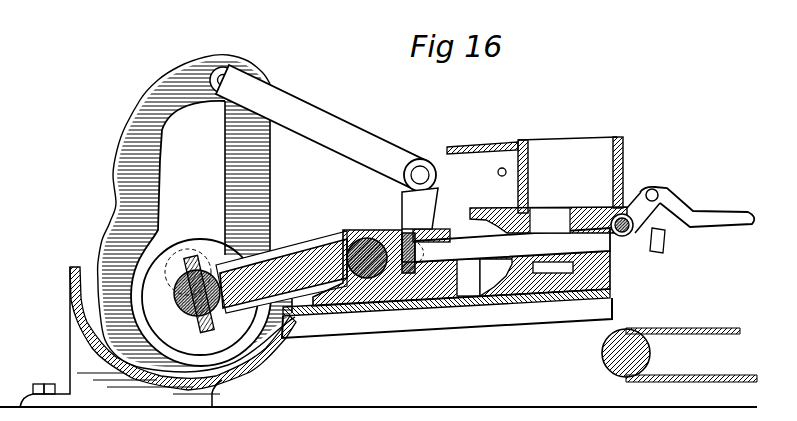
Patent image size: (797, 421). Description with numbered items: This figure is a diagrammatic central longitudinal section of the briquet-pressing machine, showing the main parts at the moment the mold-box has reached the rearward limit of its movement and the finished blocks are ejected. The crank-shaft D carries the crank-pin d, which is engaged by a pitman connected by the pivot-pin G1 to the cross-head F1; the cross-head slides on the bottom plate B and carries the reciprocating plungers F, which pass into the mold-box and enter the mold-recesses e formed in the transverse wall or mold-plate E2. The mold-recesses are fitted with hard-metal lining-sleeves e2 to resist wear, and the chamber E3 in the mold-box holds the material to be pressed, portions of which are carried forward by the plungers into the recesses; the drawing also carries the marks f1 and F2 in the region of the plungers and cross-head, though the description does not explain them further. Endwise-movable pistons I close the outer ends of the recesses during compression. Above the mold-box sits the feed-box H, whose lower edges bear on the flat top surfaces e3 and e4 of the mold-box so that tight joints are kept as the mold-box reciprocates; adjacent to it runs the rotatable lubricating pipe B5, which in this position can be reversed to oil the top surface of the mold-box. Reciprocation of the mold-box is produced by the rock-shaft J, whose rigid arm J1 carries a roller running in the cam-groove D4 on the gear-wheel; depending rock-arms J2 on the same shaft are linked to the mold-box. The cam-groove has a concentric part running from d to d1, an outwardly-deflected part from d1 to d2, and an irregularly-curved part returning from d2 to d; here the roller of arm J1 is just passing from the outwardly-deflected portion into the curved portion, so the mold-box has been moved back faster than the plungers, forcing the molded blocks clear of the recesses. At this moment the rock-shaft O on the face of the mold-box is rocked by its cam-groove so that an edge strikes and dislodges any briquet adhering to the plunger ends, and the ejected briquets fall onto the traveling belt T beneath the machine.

The end point of outwardly-deflected cam-groove portion d2 is at (245, 64).
The cam-groove D4 is at (143, 134).
The crank-pin d is at (112, 209).
The crank-shaft D is at (187, 248).
The end point of concentric cam-groove portion d1 is at (262, 238).
The pivot-pin G1 is at (377, 230).
The rigid arm or lever J1 is at (321, 127).
The rock-shaft J is at (422, 165).
The rock-arms J2 is at (401, 196).
The post f is at (406, 240).
The post top f1 is at (410, 232).
The flat top surface of mold-box e3 is at (473, 223).
The lubricating pipe B5 is at (505, 166).
The feed-box H is at (600, 150).
The chamber E3 is at (556, 220).
The flat top surface of mold-box e4 is at (613, 200).
The hard-metal lining-sleeves e2 is at (582, 229).
The apertures or mold-recesses e is at (611, 262).
The transverse wall or mold-plate E2 is at (611, 272).
The slide piece F2 is at (431, 245).
The plungers F is at (267, 317).
The bottom plate or web B is at (540, 300).
The cross-head F1 is at (443, 300).
The traveling belt T is at (717, 329).
The rock-shaft O is at (633, 230).
The pistons I is at (664, 249).